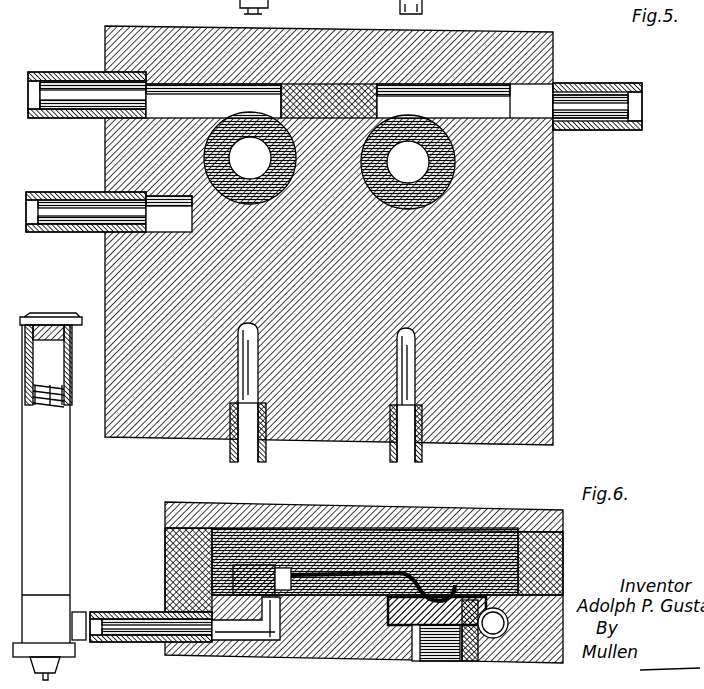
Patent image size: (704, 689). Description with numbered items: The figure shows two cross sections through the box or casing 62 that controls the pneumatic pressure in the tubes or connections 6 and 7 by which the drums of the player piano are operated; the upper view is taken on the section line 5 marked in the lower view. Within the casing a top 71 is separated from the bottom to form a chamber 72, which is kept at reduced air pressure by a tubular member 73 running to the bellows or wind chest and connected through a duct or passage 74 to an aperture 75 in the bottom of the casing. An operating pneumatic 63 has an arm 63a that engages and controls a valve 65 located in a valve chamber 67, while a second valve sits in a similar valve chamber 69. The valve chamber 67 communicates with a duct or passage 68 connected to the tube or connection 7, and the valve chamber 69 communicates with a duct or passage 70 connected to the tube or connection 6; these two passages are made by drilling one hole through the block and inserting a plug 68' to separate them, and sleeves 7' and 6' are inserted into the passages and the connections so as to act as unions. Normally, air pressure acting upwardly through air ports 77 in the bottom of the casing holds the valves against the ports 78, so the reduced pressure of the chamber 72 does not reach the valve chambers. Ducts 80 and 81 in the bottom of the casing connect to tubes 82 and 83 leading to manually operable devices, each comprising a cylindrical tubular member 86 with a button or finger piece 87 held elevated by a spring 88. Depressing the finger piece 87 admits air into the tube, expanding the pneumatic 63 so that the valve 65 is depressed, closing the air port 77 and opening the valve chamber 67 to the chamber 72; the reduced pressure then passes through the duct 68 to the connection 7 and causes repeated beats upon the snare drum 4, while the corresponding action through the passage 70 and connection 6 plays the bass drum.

In FIG. 5, the box or casing 62 is at (553, 194).
In FIG. 6, the box or casing 62 is at (563, 550).
In FIG. 5, the duct or passage 68 is at (213, 59).
In FIG. 6, the duct or passage 68 is at (517, 662).
In FIG. 5, the plug 68' is at (329, 59).
In FIG. 5, the duct or passage 70 is at (446, 95).
In FIG. 5, the tube or connection 7 is at (88, 121).
In FIG. 5, the sleeve 7' is at (87, 77).
In FIG. 5, the valve chamber 67 is at (212, 142).
In FIG. 6, the valve chamber 67 is at (472, 660).
In FIG. 5, the valve chamber 69 is at (440, 180).
In FIG. 5, the top of the box or casing 71 is at (238, 172).
In FIG. 6, the top of the box or casing 71 is at (196, 504).
In FIG. 5, the air ports 77 is at (397, 176).
In FIG. 6, the air ports 77 is at (440, 660).
In FIG. 5, the tube or connection 6 is at (597, 90).
In FIG. 5, the sleeve 6' is at (590, 127).
In FIG. 5, the tubular member 73 is at (28, 232).
In FIG. 5, the duct or passage 74 is at (100, 236).
In FIG. 6, the duct or passage 74 is at (360, 648).
In FIG. 5, the duct 80 is at (238, 372).
In FIG. 6, the duct 80 is at (232, 642).
In FIG. 5, the duct 81 is at (416, 388).
In FIG. 5, the tube 82 is at (230, 452).
In FIG. 6, the tube 82 is at (148, 614).
In FIG. 5, the tube 83 is at (390, 454).
In FIG. 5, the cylindrical tubular member 86 is at (60, 485).
In FIG. 5, the button or finger piece 87 is at (62, 368).
In FIG. 5, the spring 88 is at (66, 400).
In FIG. 6, the chamber 72 is at (262, 535).
In FIG. 6, the operating pneumatic 63 is at (300, 582).
In FIG. 6, the arm 63a is at (398, 572).
In FIG. 6, the ports 78 is at (478, 596).
In FIG. 6, the aperture 75 is at (312, 650).
In FIG. 6, the valve 65 is at (412, 648).
In FIG. 6, the section line 5 is at (83, 616).
In FIG. 6, the snare drum 4 is at (120, 578).